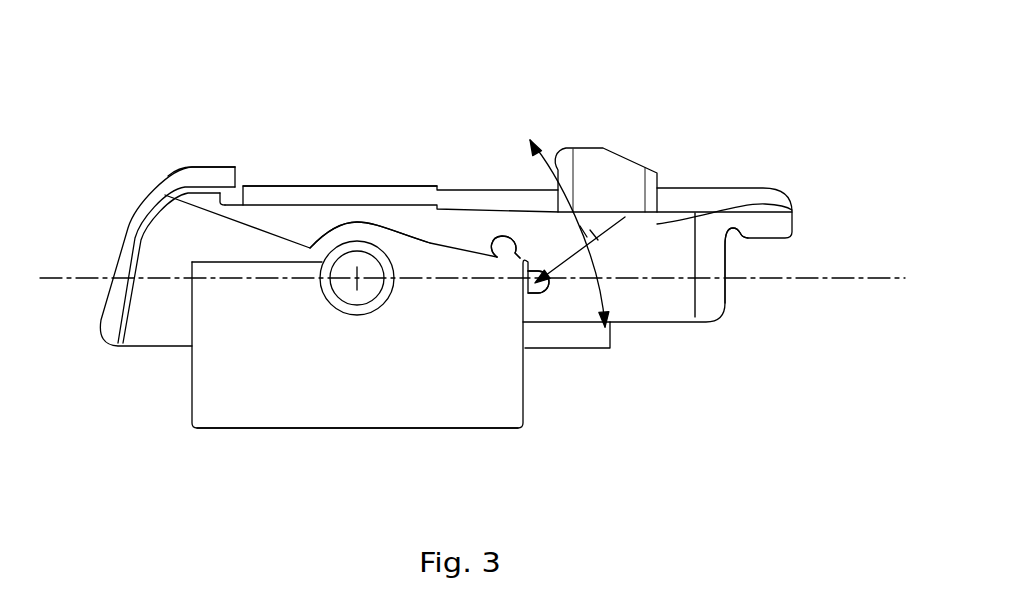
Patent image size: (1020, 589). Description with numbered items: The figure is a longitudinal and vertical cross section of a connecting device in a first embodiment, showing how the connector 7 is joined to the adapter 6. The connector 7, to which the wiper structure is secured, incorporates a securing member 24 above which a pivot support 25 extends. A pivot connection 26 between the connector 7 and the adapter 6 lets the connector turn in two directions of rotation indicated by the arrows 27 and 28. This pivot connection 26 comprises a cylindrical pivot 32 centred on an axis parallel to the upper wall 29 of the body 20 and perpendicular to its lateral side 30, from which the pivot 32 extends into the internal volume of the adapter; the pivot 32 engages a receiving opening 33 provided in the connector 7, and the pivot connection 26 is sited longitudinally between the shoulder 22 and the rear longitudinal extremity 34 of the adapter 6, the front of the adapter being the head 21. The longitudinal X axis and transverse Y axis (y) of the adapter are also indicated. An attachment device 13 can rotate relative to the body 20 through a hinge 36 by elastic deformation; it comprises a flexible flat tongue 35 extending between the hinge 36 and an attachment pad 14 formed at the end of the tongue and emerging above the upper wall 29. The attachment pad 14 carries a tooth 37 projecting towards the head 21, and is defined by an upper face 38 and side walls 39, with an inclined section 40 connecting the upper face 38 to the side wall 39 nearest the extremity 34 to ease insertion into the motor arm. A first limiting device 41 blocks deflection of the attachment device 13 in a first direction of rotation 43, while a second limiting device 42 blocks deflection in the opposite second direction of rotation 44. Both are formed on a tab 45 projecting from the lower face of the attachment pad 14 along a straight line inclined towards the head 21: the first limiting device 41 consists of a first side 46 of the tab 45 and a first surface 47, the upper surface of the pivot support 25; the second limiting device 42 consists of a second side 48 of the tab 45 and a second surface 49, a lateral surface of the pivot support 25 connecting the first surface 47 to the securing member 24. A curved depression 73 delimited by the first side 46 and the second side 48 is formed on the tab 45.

The adapter 6 is at (790, 165).
The connector 7 is at (184, 442).
The attachment device 13 is at (672, 158).
The attachment pad 14 is at (645, 213).
The body 20 is at (383, 170).
The head 21 is at (110, 228).
The shoulder 22 is at (235, 168).
The securing member 24 is at (236, 410).
The pivot support 25 is at (235, 352).
The pivot connection 26 is at (306, 291).
The arrow of direction of rotation 27 is at (165, 195).
The arrow of direction of rotation 28 is at (415, 270).
The upper wall 29 is at (353, 205).
The lateral side 30 is at (647, 263).
The cylindrical pivot 32 is at (350, 264).
The receiving opening 33 is at (289, 270).
The rear longitudinal extremity 34 is at (740, 245).
The tongue 35 is at (507, 188).
The hinge 36 is at (404, 188).
The tooth 37 is at (585, 150).
The upper face 38 is at (587, 150).
The side wall 39 is at (558, 200).
The inclined section 40 is at (630, 153).
The first limiting device 41 is at (518, 252).
The second limiting device 42 is at (548, 300).
The first direction of rotation 43 is at (532, 138).
The second direction of rotation 44 is at (607, 297).
The tab 45 is at (545, 263).
The first side 46 is at (497, 237).
The first surface 47 is at (522, 272).
The second side 48 is at (540, 288).
The second surface 49 is at (522, 278).
The depression 73 is at (533, 290).
The longitudinal X axis X is at (845, 278).
The transverse Y axis y is at (357, 278).